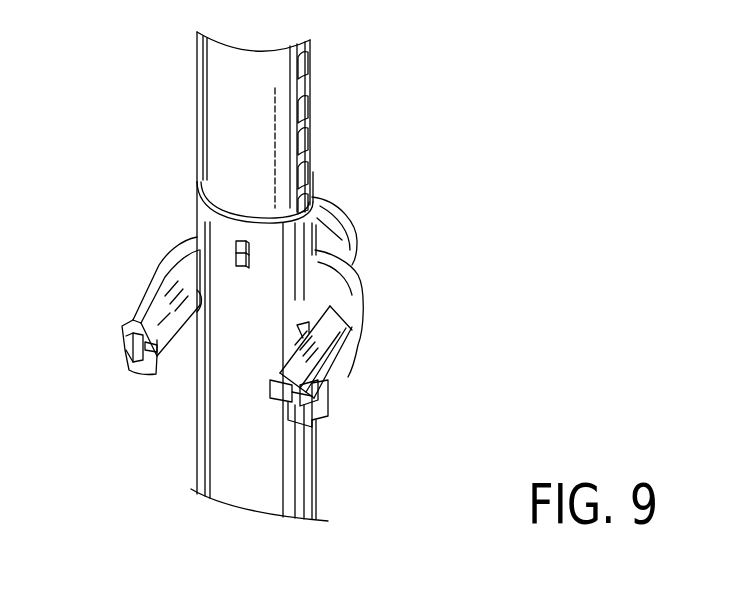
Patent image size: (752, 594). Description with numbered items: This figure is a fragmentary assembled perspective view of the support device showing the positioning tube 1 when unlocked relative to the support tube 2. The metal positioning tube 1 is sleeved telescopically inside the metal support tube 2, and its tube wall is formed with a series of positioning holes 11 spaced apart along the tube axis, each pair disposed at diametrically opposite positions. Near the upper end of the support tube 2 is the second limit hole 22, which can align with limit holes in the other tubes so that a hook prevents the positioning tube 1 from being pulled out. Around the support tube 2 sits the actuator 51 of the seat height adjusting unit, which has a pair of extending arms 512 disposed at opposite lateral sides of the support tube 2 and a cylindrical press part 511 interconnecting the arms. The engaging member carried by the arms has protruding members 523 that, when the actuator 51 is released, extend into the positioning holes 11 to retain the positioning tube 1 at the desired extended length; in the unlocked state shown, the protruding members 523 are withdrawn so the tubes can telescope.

The positioning tube 1 is at (336, 76).
The positioning holes 11 is at (302, 110).
The support tube 2 is at (168, 211).
The second limit hole 22 is at (236, 263).
The actuator 51 is at (372, 212).
The press part 511 is at (340, 240).
The extending arms 512 is at (185, 302).
The protruding members 523 is at (175, 328).